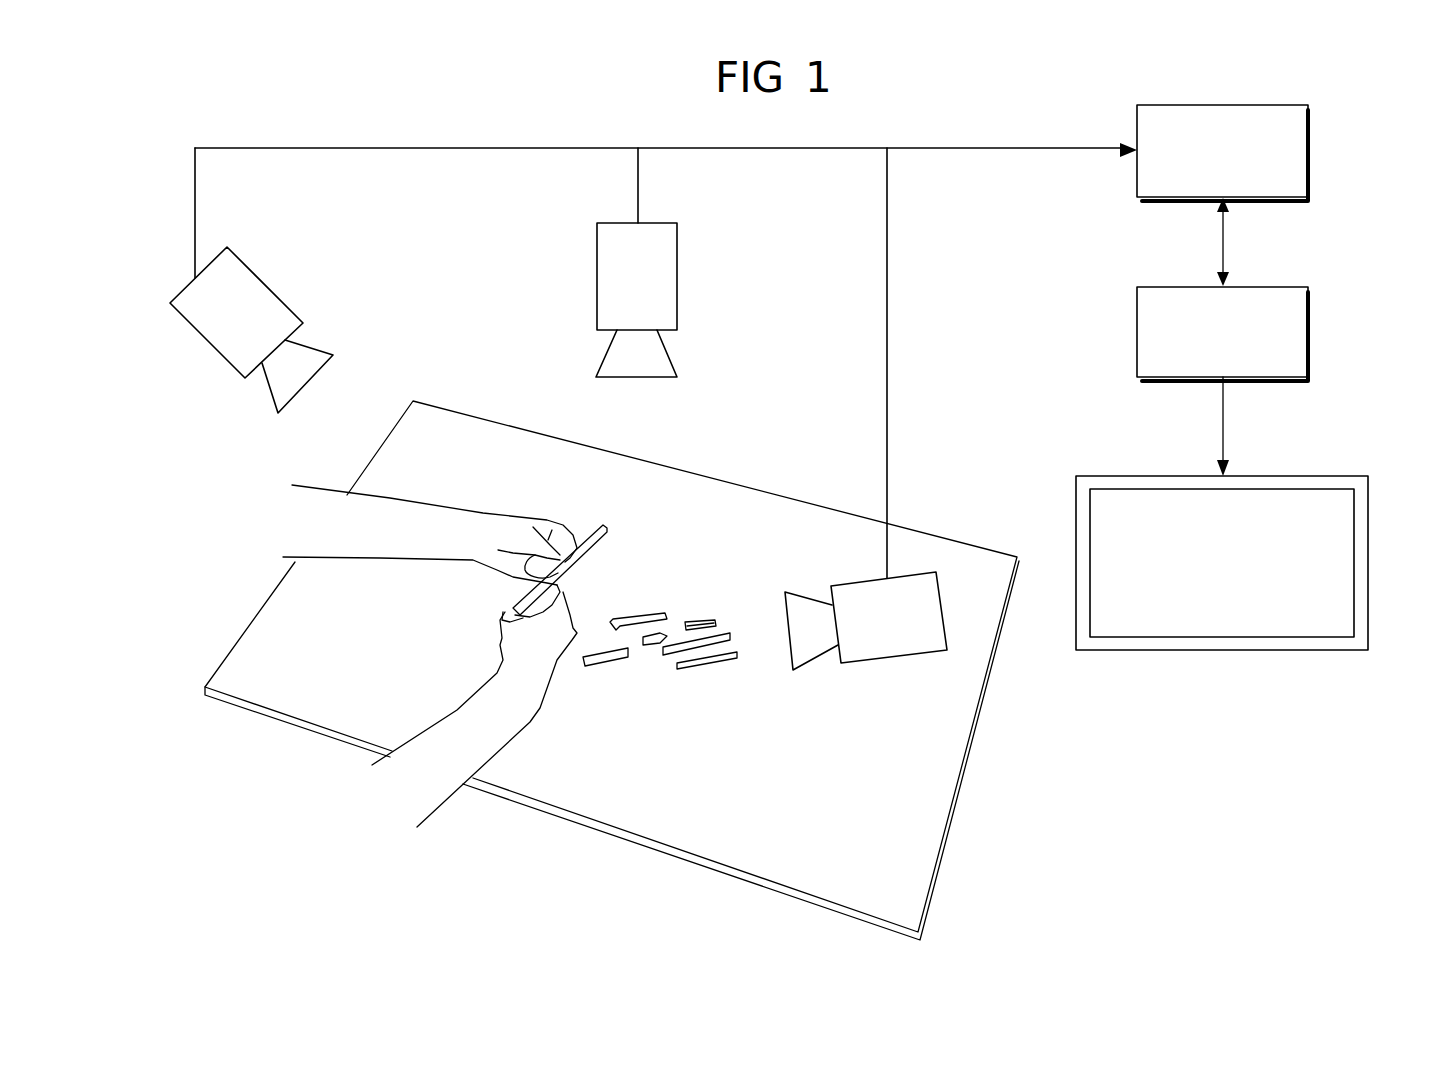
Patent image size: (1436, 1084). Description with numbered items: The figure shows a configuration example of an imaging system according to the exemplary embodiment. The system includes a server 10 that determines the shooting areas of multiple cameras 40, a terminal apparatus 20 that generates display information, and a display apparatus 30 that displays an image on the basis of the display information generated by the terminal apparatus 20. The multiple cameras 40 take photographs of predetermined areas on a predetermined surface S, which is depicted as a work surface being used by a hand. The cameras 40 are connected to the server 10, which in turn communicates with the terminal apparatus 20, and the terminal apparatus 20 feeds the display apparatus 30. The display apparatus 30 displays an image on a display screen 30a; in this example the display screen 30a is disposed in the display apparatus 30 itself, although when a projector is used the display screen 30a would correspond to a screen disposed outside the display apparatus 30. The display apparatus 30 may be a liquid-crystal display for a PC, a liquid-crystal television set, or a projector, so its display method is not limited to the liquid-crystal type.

The server 10 is at (1308, 150).
The terminal apparatus 20 is at (1308, 327).
The display apparatus 30 is at (1222, 525).
The display screen 30a is at (1130, 489).
The camera 40 is at (263, 283).
The predetermined surface S is at (935, 547).